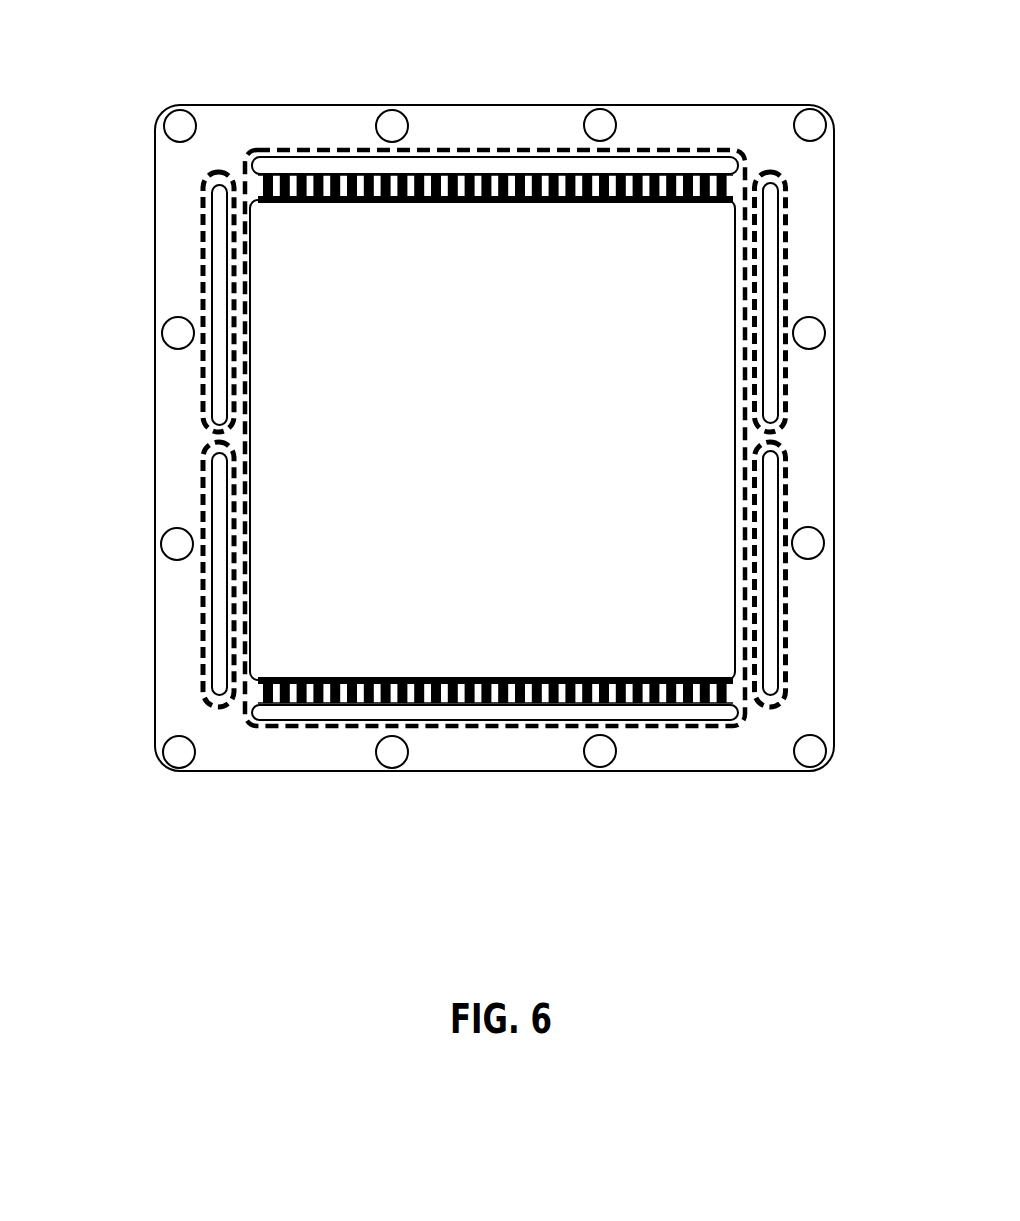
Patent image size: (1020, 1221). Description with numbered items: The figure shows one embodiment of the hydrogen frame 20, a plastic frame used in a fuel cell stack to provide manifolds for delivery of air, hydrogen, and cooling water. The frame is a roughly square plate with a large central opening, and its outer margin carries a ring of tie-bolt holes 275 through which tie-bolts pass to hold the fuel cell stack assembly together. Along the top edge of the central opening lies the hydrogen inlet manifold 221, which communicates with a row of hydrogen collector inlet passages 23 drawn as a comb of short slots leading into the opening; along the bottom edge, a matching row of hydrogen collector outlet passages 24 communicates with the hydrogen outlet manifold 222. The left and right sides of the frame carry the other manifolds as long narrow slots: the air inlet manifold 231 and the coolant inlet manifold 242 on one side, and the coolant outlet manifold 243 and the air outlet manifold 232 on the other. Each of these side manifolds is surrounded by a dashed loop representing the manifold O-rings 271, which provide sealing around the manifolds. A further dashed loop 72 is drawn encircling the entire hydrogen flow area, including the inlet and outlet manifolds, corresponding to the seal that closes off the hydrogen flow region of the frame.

The hydrogen frame 20 is at (494, 389).
The tie-bolt holes 275 is at (493, 404).
The seal groove 72 is at (495, 382).
The hydrogen collector inlet passages 23 is at (305, 175).
The hydrogen collector outlet passages 24 is at (632, 702).
The hydrogen inlet manifold 221 is at (520, 107).
The hydrogen outlet manifold 222 is at (495, 774).
The air inlet manifold 231 is at (138, 305).
The coolant inlet manifold 242 is at (138, 574).
The coolant outlet manifold 243 is at (854, 303).
The air outlet manifold 232 is at (853, 573).
The manifold O-rings 271 is at (491, 425).